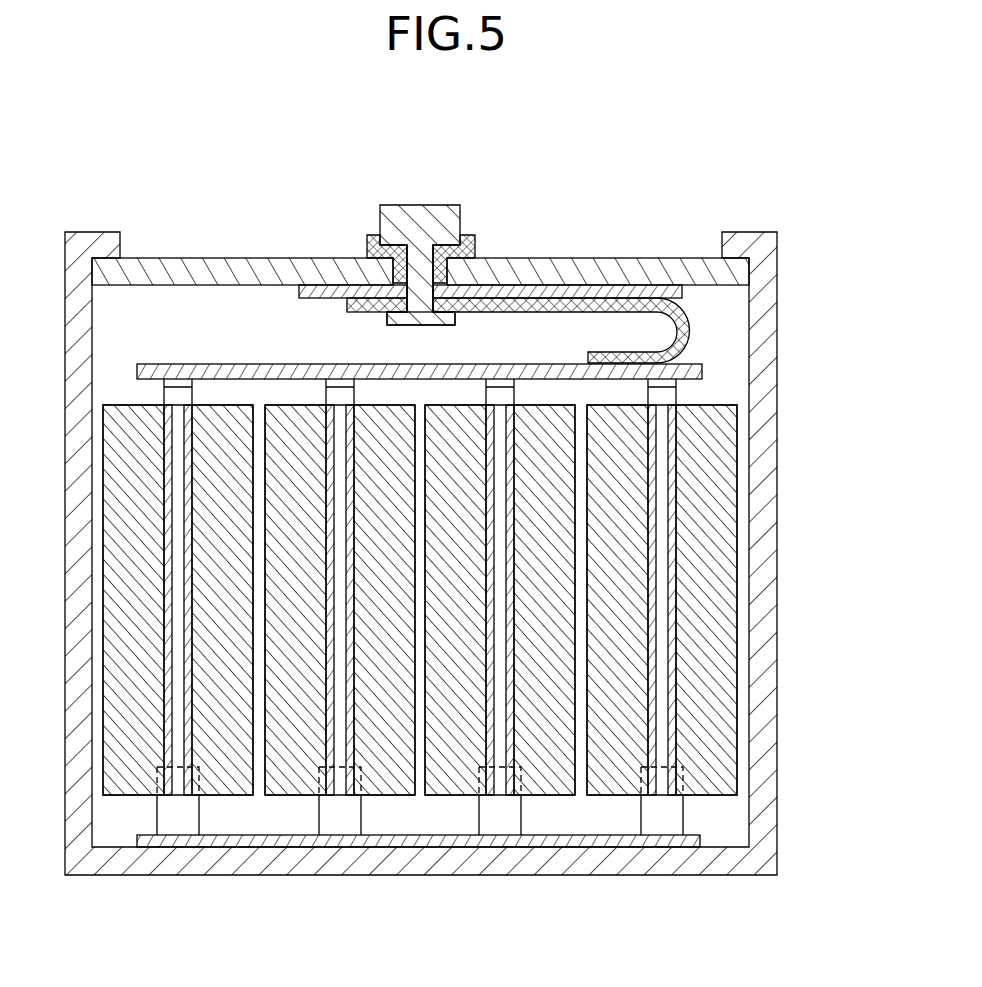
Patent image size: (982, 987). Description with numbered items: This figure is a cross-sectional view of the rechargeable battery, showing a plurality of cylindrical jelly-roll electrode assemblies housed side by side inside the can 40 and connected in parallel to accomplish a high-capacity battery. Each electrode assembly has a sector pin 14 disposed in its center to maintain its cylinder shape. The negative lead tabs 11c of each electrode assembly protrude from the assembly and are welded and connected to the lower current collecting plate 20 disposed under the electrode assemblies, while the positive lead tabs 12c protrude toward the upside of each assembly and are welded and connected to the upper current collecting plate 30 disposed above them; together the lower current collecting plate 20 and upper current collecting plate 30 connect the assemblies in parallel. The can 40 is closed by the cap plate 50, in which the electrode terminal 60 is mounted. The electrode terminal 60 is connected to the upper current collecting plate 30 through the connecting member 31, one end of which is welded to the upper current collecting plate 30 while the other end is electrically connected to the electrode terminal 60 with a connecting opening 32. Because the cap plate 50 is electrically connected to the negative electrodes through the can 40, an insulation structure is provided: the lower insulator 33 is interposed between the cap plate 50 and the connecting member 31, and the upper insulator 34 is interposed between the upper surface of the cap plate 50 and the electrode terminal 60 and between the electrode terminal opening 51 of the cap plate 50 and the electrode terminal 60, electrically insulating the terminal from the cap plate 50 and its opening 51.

The negative lead tab 11c is at (663, 820).
The positive lead tab 12c is at (664, 394).
The sector pin 14 is at (661, 509).
The lower current collecting plate 20 is at (598, 842).
The upper current collecting plate 30 is at (694, 371).
The connecting member 31 is at (684, 311).
The connecting opening 32 is at (418, 314).
The lower insulator 33 is at (545, 292).
The upper insulator 34 is at (467, 236).
The can 40 is at (762, 340).
The cap plate 50 is at (638, 270).
The electrode terminal opening 51 is at (409, 295).
The electrode terminal 60 is at (432, 218).